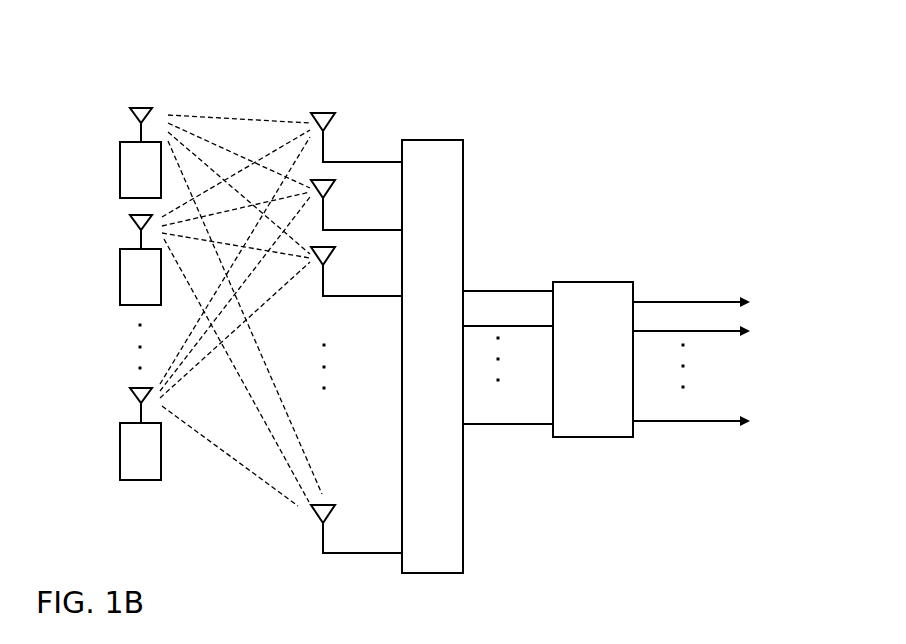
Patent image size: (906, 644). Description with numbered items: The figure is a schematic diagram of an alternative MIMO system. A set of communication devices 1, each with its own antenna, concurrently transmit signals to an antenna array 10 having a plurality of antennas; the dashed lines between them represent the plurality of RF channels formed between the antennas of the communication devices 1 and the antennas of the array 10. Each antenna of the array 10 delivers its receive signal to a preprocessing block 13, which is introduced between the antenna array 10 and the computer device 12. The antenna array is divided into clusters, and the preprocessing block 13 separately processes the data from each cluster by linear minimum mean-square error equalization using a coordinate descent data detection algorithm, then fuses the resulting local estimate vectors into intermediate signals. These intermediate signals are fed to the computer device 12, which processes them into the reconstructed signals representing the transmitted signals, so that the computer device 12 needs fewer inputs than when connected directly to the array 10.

The communication devices 1 is at (149, 182).
The antenna array 10 is at (328, 88).
The preprocessing block 13 is at (447, 364).
The computer device 12 is at (607, 363).